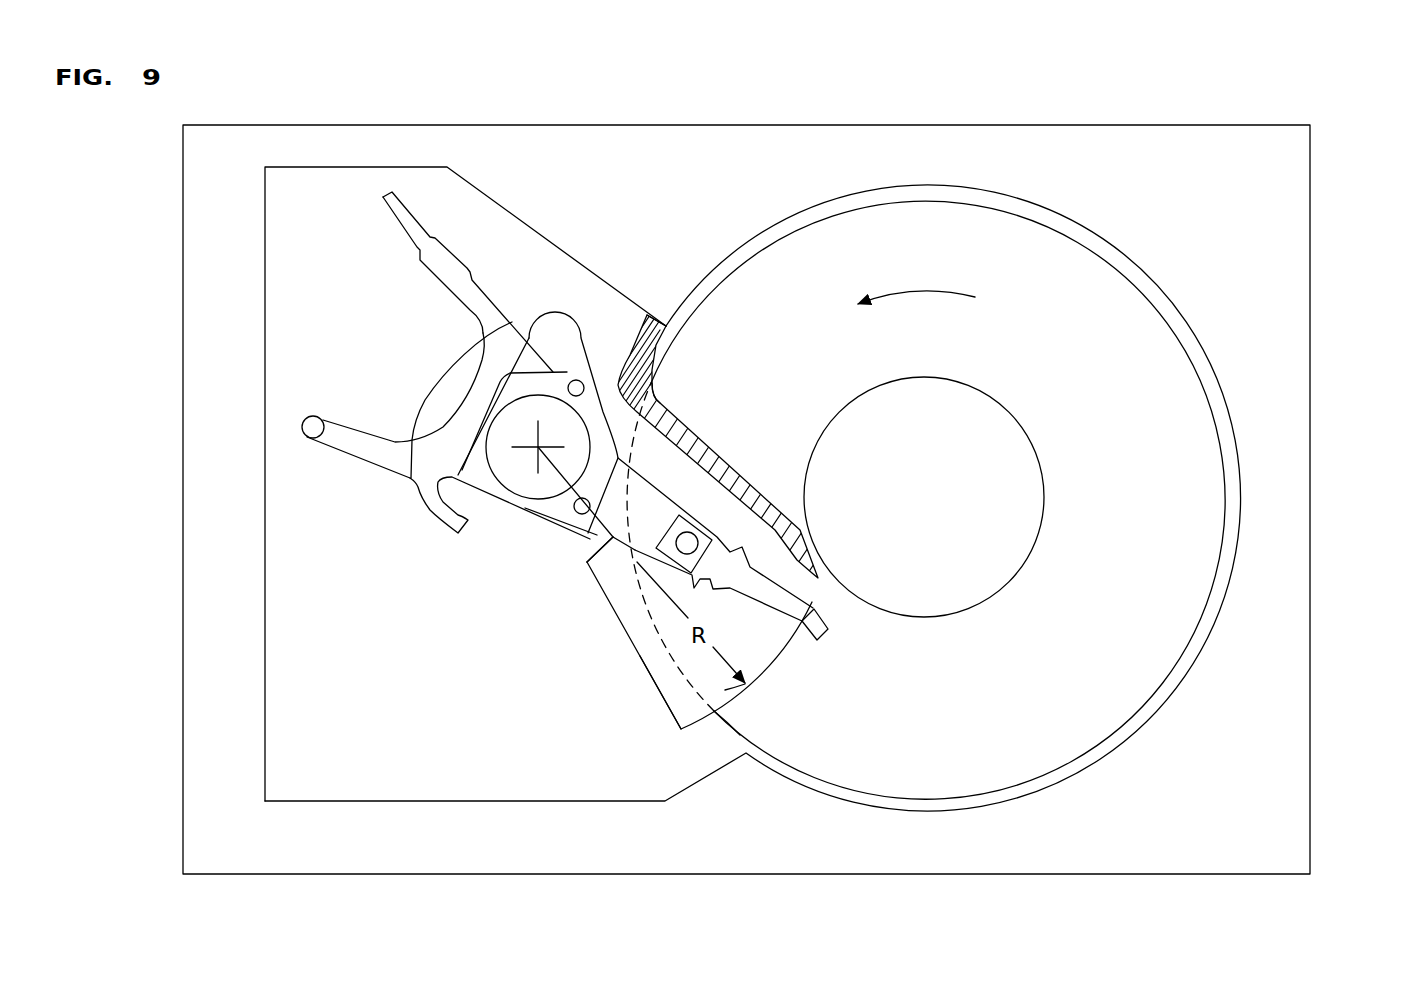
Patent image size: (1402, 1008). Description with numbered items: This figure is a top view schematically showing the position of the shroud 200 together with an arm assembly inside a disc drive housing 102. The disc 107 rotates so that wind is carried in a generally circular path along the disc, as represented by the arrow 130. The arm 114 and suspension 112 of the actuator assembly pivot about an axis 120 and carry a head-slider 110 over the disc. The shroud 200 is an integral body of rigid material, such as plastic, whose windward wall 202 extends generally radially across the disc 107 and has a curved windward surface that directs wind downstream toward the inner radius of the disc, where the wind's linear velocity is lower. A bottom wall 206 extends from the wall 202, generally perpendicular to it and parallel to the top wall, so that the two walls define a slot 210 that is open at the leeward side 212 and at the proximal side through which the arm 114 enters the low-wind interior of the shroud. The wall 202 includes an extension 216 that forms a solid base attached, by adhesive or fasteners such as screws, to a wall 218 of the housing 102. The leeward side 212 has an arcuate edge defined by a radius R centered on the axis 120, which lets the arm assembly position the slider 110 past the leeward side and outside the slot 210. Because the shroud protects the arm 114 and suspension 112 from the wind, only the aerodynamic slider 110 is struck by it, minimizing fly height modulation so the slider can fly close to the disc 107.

The housing 102 is at (1312, 490).
The disc 107 is at (1015, 772).
The slider 110 is at (817, 640).
The suspension 112 is at (777, 590).
The arm 114 is at (587, 562).
The axis 120 is at (538, 447).
The arrow 130 is at (908, 290).
The shroud 200 is at (628, 643).
The wall 202 is at (722, 432).
The bottom wall 206 is at (668, 705).
The slot 210 is at (725, 690).
The leeward side 212 is at (720, 704).
The extension 216 is at (653, 350).
The wall 218 is at (613, 310).